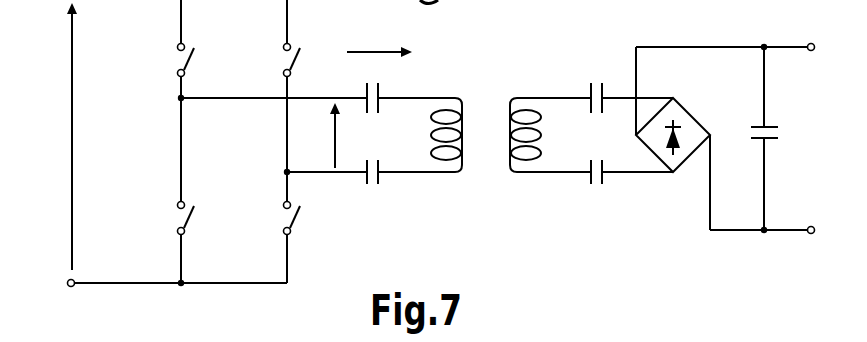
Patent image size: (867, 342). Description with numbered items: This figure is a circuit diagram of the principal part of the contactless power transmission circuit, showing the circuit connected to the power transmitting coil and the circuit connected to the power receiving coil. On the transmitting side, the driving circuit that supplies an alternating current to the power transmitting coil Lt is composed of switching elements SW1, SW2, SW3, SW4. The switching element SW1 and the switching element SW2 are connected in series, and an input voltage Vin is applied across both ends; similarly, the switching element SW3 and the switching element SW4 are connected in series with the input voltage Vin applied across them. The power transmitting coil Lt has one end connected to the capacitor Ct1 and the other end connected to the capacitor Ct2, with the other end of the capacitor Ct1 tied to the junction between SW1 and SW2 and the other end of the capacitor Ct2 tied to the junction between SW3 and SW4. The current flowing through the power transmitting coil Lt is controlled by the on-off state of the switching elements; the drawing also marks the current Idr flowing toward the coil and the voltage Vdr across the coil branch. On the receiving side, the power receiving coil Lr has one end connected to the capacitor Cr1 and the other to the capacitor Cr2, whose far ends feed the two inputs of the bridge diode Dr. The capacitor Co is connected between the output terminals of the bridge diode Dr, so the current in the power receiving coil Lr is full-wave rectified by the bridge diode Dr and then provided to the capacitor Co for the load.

The input voltage Vin is at (157, 145).
The switching element SW1 is at (159, 100).
The switching element SW2 is at (158, 244).
The switching element SW3 is at (266, 100).
The switching element SW4 is at (266, 243).
The resonant current Idr is at (379, 42).
The bridge output voltage Vdr is at (319, 135).
The capacitor Ct1 is at (372, 90).
The capacitor Ct2 is at (372, 162).
The power transmitting coil Lt is at (447, 127).
The power receiving coil Lr is at (525, 127).
The capacitor Cr1 is at (600, 91).
The capacitor Cr2 is at (600, 163).
The bridge diode Dr is at (725, 139).
The capacitor Co is at (773, 138).